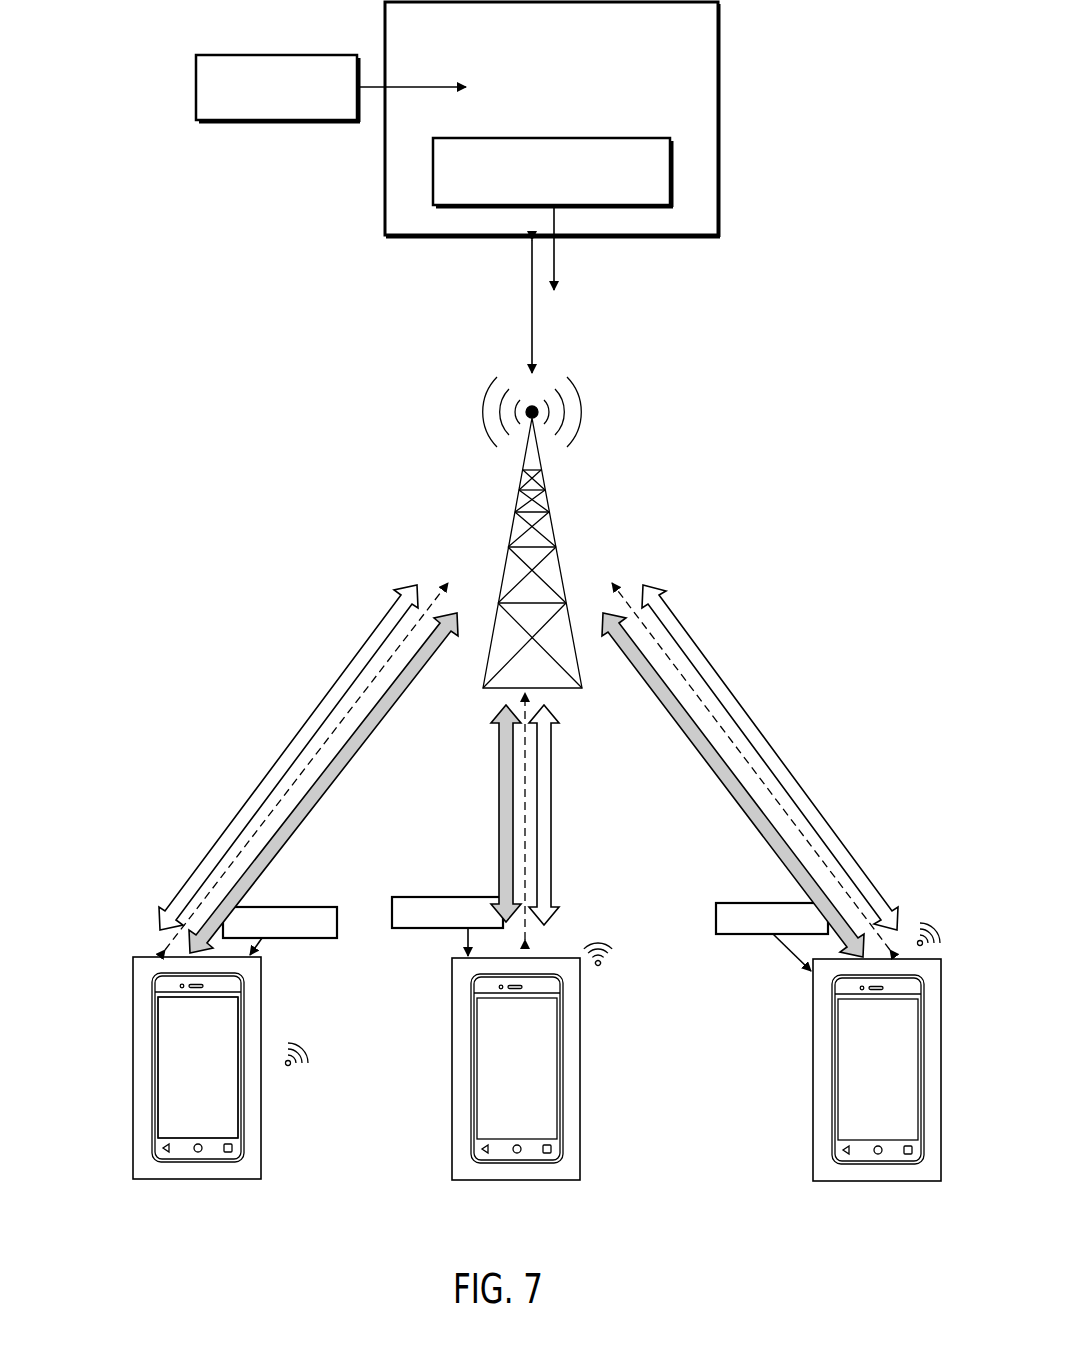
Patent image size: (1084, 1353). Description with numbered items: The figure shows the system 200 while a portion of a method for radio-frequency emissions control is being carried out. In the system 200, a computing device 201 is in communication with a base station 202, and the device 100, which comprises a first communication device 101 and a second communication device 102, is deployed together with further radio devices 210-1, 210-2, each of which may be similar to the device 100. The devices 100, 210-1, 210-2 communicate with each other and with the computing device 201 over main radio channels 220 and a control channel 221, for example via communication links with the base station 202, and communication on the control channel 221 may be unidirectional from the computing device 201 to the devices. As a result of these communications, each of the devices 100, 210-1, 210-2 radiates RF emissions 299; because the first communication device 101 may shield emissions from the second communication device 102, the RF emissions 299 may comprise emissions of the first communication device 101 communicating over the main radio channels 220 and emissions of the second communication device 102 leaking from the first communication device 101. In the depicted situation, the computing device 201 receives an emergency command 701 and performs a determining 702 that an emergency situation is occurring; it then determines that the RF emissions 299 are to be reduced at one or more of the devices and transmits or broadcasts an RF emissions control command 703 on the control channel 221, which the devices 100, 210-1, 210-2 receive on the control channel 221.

The device 100 is at (188, 1049).
The first communication device 101 is at (262, 1118).
The second communication device 102 is at (165, 1105).
The system 200 is at (228, 362).
The computing device 201 is at (385, 21).
The base station 202 is at (548, 518).
The radio device 210-1 is at (580, 1068).
The radio device 210-2 is at (812, 1124).
The main radio channels 220 is at (262, 803).
The control channel 221 is at (270, 860).
The RF emissions 299 is at (310, 1045).
The emergency command 701 is at (196, 88).
The determining 702 is at (630, 93).
The RF emissions control command 703 is at (433, 185).